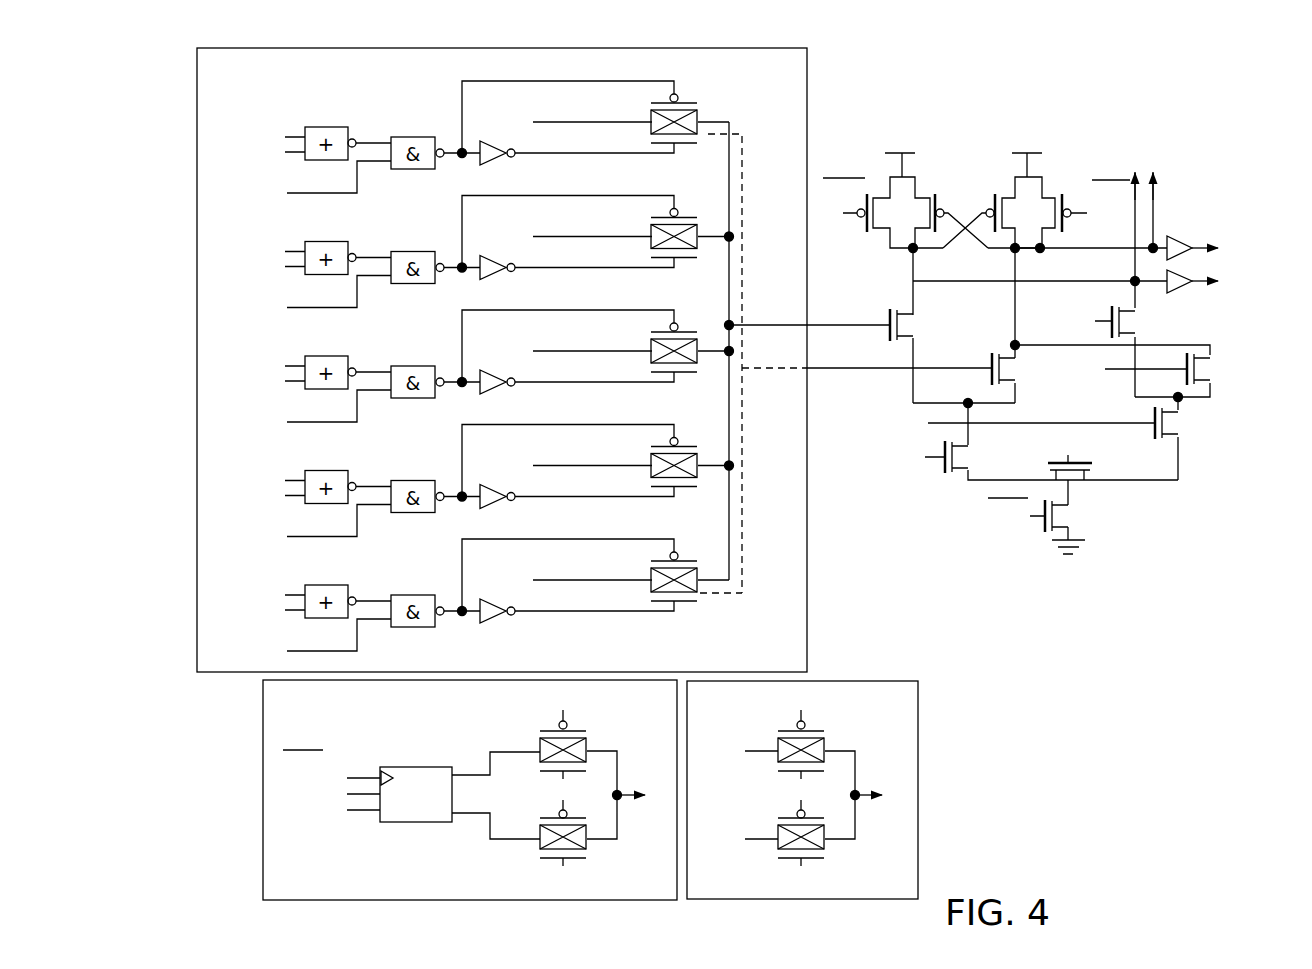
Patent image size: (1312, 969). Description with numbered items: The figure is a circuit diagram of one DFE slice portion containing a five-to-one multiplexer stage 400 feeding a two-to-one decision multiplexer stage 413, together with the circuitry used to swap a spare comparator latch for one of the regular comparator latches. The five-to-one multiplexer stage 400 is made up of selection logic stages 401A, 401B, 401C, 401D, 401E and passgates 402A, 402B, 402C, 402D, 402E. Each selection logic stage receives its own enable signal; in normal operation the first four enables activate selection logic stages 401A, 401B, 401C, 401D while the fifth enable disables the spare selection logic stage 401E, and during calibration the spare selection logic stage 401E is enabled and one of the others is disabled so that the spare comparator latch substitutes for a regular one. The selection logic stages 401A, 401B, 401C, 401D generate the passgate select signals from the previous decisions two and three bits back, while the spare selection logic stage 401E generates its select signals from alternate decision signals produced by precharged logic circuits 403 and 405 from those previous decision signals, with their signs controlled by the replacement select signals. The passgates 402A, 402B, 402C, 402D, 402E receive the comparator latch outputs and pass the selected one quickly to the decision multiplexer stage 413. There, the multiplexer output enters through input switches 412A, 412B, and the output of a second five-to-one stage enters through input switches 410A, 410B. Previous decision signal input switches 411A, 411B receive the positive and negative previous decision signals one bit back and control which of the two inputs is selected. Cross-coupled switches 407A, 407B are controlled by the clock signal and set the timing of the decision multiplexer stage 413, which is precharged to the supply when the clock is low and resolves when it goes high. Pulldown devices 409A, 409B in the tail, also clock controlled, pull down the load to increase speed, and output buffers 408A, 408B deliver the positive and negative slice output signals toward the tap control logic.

The 5:1 multiplexer stage 400 is at (808, 100).
The selection logic stage 401A is at (378, 127).
The selection logic stage 401B is at (378, 242).
The selection logic stage 401C is at (378, 356).
The selection logic stage 401D is at (378, 470).
The selection logic stage 401E is at (378, 585).
The passgate 402A is at (700, 117).
The passgate 402B is at (700, 233).
The passgate 402C is at (698, 357).
The passgate 402D is at (698, 470).
The passgate 402E is at (698, 590).
The precharged logic circuit 403 is at (263, 785).
The precharged logic circuit 405 is at (918, 795).
The cross-coupled switch 407A is at (915, 188).
The cross-coupled switch 407B is at (1015, 183).
The output buffer 408A is at (1172, 236).
The output buffer 408B is at (1172, 294).
The pulldown device 409A is at (1078, 478).
The pulldown device 409B is at (1066, 520).
The input switch 410A is at (1125, 325).
The input switch 410B is at (1210, 368).
The previous decision signal input switch 411A is at (1180, 425).
The previous decision signal input switch 411B is at (964, 462).
The input switch 412A is at (905, 330).
The input switch 412B is at (1010, 370).
The 2:1 decision multiplexer stage 413 is at (1065, 137).